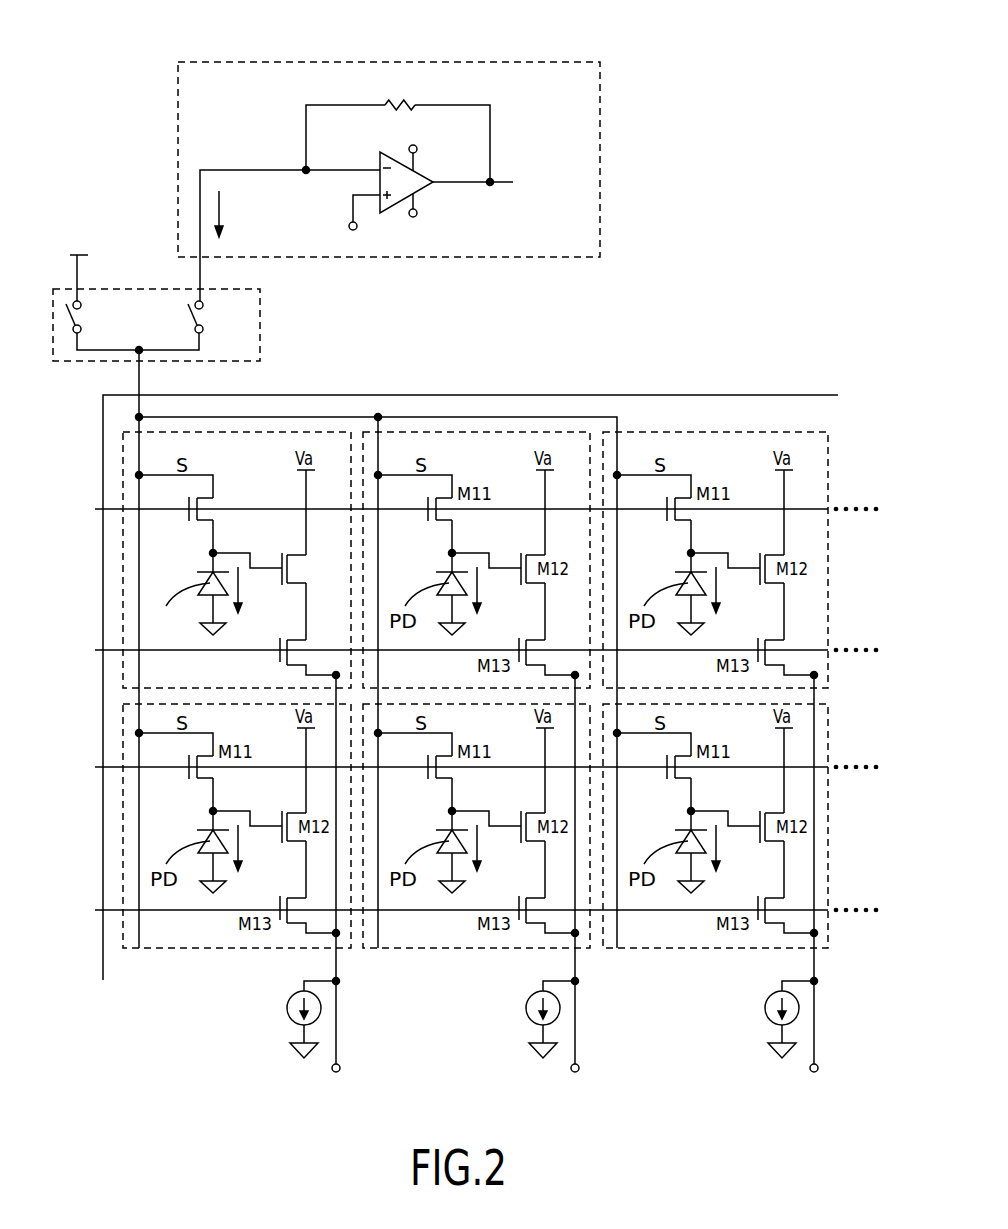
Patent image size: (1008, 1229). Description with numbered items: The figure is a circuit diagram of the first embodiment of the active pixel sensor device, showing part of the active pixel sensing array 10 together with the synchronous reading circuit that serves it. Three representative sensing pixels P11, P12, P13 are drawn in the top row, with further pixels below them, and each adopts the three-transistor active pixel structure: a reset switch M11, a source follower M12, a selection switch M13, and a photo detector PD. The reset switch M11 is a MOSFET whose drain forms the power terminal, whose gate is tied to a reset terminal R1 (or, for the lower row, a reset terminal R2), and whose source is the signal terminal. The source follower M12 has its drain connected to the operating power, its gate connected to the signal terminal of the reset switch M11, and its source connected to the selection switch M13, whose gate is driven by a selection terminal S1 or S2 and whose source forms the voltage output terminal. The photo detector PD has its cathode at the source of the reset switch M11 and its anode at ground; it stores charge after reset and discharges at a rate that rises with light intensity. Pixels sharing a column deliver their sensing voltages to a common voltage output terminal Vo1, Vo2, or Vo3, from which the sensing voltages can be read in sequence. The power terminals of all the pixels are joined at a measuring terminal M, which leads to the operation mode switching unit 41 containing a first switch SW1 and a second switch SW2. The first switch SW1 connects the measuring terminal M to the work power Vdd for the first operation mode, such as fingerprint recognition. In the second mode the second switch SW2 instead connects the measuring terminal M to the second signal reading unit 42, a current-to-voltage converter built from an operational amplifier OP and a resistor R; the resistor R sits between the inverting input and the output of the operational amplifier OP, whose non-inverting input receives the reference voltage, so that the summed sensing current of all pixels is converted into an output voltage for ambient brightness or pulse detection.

The second signal reading unit 42 is at (389, 150).
The operation mode switching unit 41 is at (193, 297).
The active pixel sensing array 10 is at (655, 395).
The sensing pixel P11 is at (240, 726).
The sensing pixel P12 is at (476, 726).
The sensing pixel P13 is at (715, 726).
The measuring terminal M is at (139, 417).
The resistor R is at (400, 90).
The operational amplifier OP is at (421, 181).
The work power Vdd is at (74, 267).
The first switch SW1 is at (97, 317).
The second switch SW2 is at (218, 317).
The reset switch M11 is at (221, 502).
The source follower M12 is at (306, 569).
The selection switch M13 is at (289, 658).
The photo detector PD is at (189, 594).
The reset terminal R1 is at (472, 508).
The reset terminal R2 is at (472, 766).
The selection terminal S1 is at (472, 650).
The selection terminal S2 is at (472, 910).
The first voltage output terminal Vo1 is at (318, 887).
The second voltage output terminal Vo2 is at (557, 887).
The voltage output terminal Vo3 is at (796, 887).